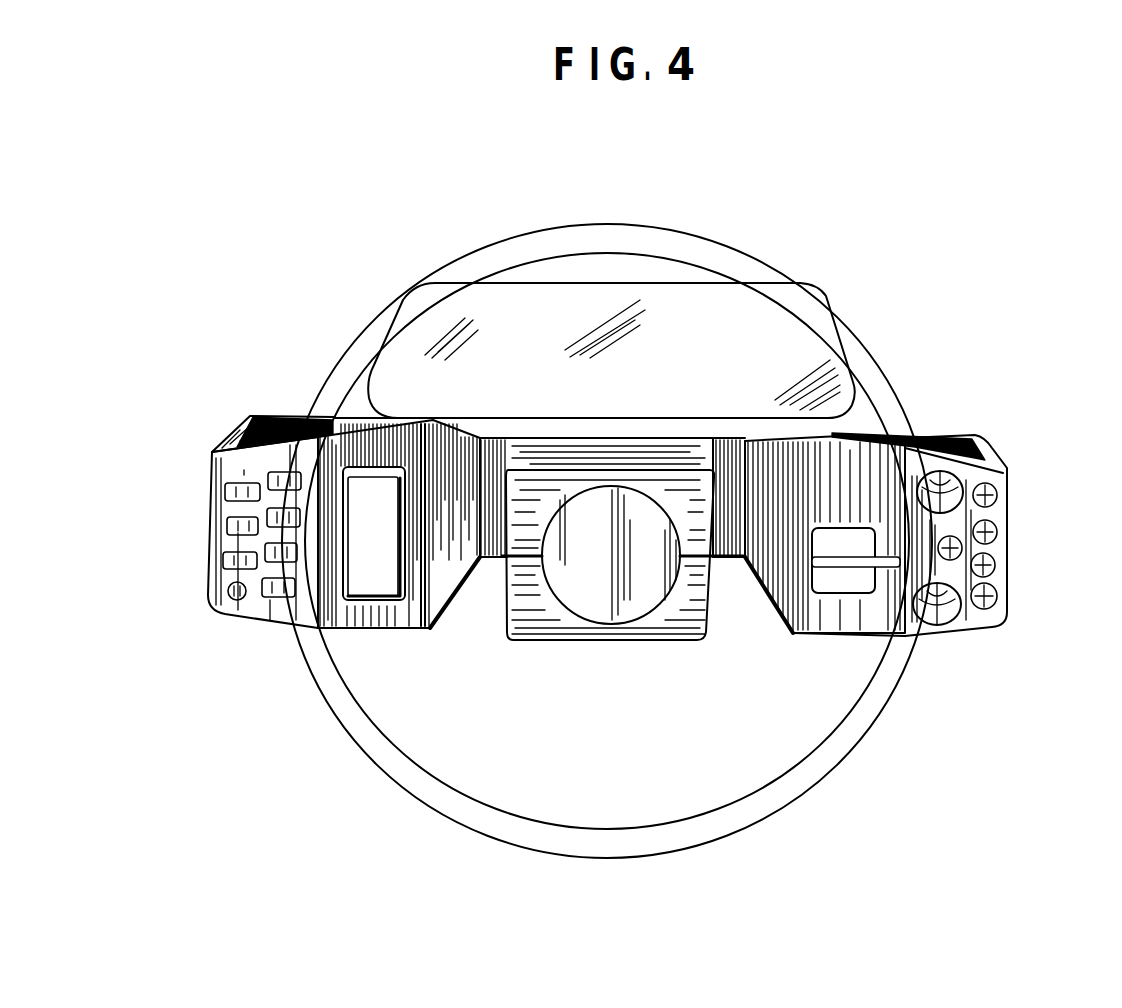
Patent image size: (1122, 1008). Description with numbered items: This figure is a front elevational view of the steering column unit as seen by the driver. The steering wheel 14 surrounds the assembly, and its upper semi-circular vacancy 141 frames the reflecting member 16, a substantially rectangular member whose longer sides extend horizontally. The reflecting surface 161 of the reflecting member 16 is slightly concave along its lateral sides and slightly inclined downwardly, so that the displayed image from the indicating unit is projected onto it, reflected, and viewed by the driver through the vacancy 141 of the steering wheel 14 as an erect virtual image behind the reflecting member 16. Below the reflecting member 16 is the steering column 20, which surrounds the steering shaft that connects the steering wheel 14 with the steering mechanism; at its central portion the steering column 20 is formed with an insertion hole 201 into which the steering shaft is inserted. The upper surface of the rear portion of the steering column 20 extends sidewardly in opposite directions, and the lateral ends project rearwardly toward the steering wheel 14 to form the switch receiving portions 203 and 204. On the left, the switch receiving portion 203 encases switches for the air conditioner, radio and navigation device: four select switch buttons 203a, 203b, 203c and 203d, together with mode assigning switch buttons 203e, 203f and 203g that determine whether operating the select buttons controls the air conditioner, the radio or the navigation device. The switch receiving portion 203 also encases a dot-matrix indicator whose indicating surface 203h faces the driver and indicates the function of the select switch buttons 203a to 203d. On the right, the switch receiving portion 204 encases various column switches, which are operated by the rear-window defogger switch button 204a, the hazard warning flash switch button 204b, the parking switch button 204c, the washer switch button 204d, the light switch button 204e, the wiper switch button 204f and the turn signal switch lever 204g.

The steering wheel 14 is at (860, 347).
The upper semi-circular vacancy 141 is at (590, 267).
The reflecting member 16 is at (658, 285).
The reflecting surface 161 is at (738, 330).
The steering column 20 is at (716, 558).
The insertion hole 201 is at (578, 606).
The switch receiving portion 203 is at (266, 418).
The select switch button 203a is at (272, 470).
The select switch button 203b is at (268, 518).
The select switch button 203c is at (275, 558).
The select switch button 203d is at (273, 595).
The mode assigning switch button 203e is at (230, 490).
The mode assigning switch button 203f is at (228, 527).
The mode assigning switch button 203g is at (224, 560).
The indicating surface 203h is at (367, 577).
The switch receiving portion 204 is at (943, 569).
The rear-window defogger switch button 204a is at (1000, 490).
The hazard warning flash switch button 204b is at (1000, 532).
The parking switch button 204c is at (1000, 565).
The washer switch button 204d is at (1000, 600).
The light switch button 204e is at (960, 472).
The wiper switch button 204f is at (948, 614).
The turn signal switch lever 204g is at (843, 582).